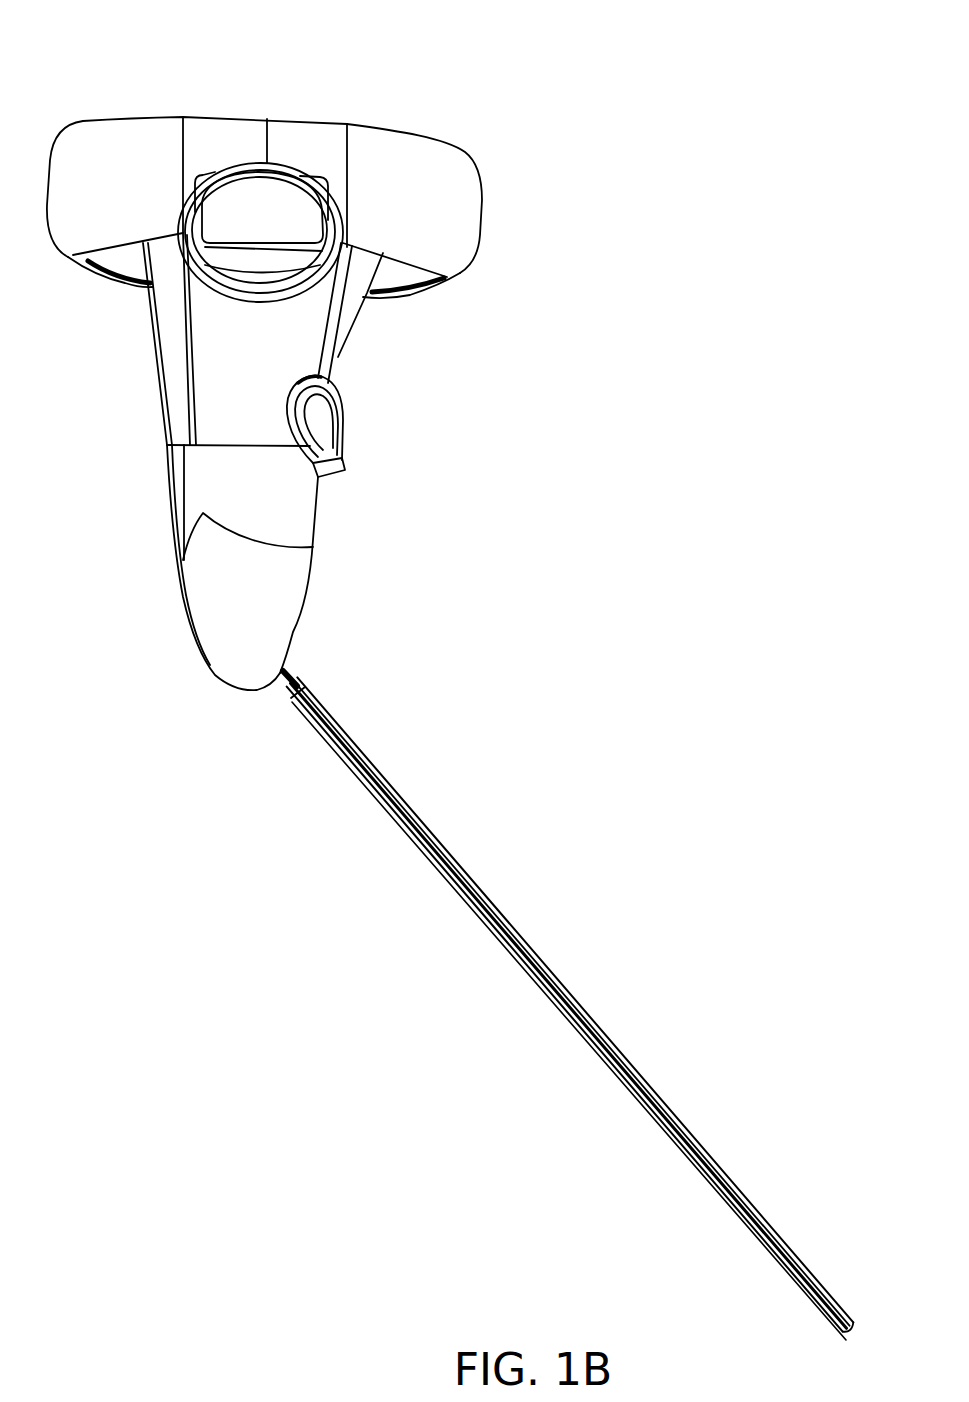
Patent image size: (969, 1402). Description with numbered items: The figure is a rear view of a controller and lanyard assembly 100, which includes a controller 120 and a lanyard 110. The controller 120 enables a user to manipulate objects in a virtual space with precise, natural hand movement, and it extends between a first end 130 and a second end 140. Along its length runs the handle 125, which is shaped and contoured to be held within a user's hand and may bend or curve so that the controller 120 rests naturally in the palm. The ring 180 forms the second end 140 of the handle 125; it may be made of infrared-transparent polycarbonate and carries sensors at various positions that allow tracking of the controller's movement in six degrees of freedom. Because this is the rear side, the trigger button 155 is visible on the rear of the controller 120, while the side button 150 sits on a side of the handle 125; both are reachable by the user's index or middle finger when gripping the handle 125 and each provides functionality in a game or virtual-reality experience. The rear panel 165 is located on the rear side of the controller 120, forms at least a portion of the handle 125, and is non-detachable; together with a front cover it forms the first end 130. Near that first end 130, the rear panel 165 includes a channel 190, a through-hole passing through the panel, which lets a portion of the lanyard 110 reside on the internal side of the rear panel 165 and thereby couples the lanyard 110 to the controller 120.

The controller and lanyard assembly 100 is at (752, 221).
The lanyard 110 is at (673, 1120).
The controller 120 is at (468, 207).
The handle 125 is at (197, 495).
The first end 130 is at (247, 691).
The second end 140 is at (245, 117).
The side button 150 is at (333, 427).
The trigger button 155 is at (310, 262).
The rear panel 165 is at (273, 612).
The ring 180 is at (125, 150).
The channel 190 is at (290, 672).